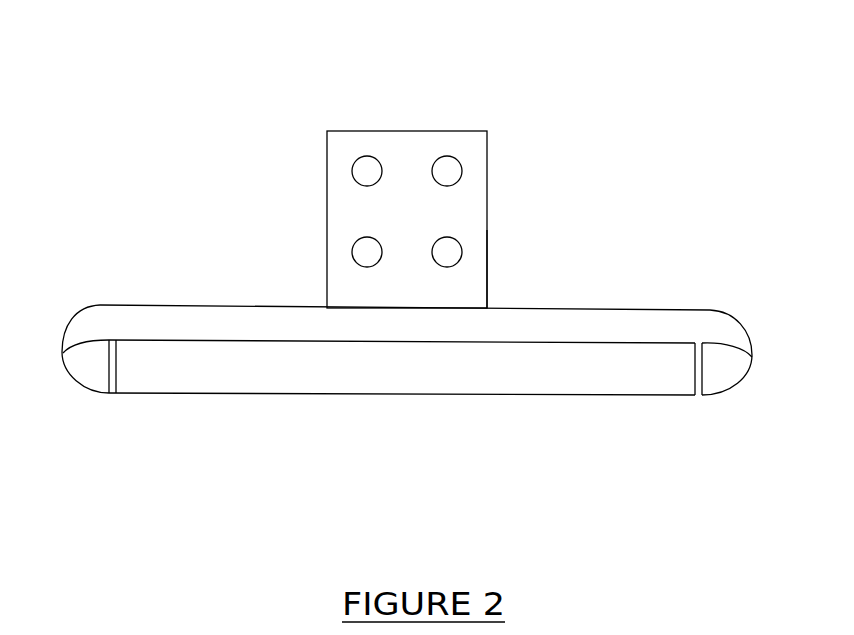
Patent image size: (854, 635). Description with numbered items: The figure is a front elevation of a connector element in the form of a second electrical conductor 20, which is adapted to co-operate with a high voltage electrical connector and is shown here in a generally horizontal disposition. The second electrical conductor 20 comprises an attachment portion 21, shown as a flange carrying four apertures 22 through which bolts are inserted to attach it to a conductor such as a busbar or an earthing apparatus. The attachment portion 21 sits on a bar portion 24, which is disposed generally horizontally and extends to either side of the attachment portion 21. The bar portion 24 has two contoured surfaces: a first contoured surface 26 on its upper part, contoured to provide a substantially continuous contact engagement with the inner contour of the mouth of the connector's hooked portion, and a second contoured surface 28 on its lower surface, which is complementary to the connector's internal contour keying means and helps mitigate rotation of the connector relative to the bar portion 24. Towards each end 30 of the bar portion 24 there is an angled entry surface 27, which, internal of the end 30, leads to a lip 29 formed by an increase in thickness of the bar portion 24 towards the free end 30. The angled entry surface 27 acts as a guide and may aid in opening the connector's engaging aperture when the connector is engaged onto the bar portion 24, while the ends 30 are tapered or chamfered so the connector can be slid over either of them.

The second electrical conductor 20 is at (501, 165).
The attachment portion 21 is at (501, 273).
The apertures 22 is at (386, 148).
The bar portion 24 is at (623, 300).
The first contoured surface 26 is at (187, 290).
The angled entry surface 27 is at (94, 391).
The second contoured surface 28 is at (384, 388).
The lip 29 is at (121, 404).
The end 30 is at (77, 380).